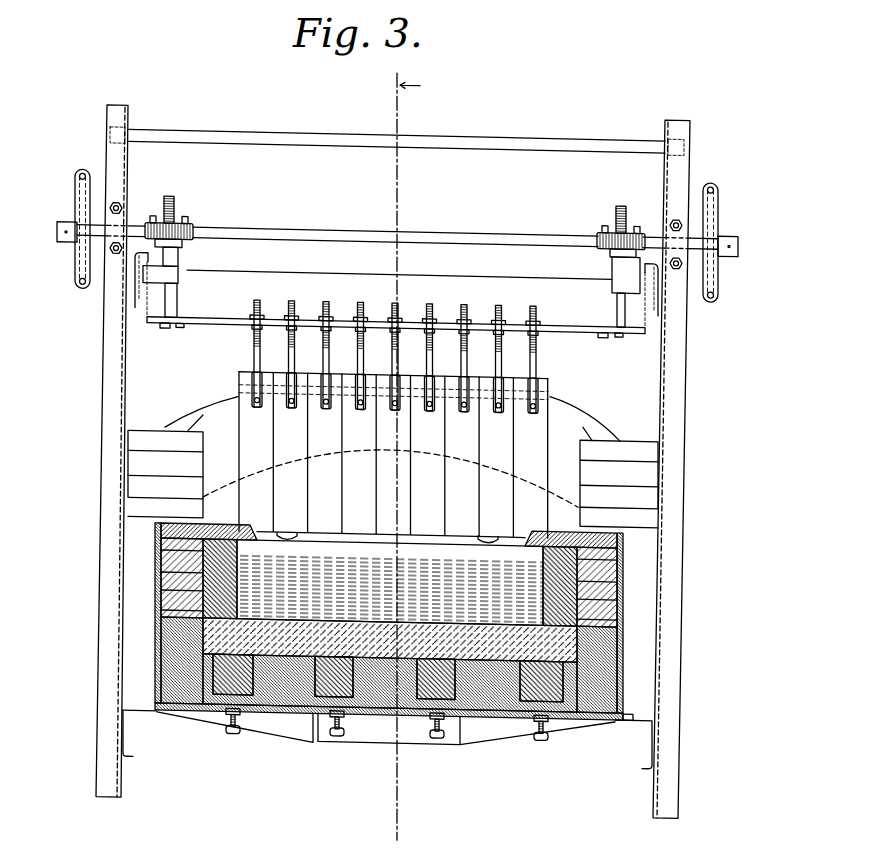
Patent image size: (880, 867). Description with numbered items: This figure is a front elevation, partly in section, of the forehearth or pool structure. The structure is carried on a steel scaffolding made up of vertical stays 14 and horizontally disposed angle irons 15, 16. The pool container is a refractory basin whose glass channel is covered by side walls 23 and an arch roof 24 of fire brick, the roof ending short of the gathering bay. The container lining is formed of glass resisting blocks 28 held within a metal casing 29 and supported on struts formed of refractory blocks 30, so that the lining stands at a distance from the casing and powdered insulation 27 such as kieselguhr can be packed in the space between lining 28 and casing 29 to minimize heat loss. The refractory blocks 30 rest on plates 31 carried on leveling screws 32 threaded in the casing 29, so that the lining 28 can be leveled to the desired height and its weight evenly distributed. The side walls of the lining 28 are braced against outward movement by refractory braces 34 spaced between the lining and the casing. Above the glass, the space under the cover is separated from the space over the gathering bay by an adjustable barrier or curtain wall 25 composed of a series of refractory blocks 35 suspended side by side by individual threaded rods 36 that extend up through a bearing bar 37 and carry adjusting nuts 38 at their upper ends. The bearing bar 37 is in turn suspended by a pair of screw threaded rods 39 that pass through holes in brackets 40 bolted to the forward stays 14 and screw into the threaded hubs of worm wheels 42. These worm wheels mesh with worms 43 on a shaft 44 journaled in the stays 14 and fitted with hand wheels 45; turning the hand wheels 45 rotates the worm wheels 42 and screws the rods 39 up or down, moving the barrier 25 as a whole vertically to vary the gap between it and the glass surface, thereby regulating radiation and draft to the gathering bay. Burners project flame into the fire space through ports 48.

The vertical stays 14 is at (107, 490).
The angle irons 15 is at (128, 619).
The angle irons 16 is at (128, 454).
The side walls 23 is at (135, 524).
The arch roof 24 is at (570, 413).
The barrier or curtain wall 25 is at (393, 455).
The insulation 27 is at (370, 692).
The glass resisting blocks 28 is at (293, 640).
The metal casing 29 is at (503, 702).
The refractory blocks 30 is at (423, 687).
The plates 31 is at (532, 702).
The leveling screws 32 is at (240, 718).
The refractory braces 34 is at (163, 560).
The refractory blocks 35 is at (533, 409).
The threaded rods 36 is at (430, 346).
The bearing bar 37 is at (578, 323).
The adjusting nuts 38 is at (258, 311).
The screw threaded rods 39 is at (170, 296).
The brackets 40 is at (167, 273).
The worm wheels 42 is at (187, 222).
The worms 43 is at (181, 243).
The shaft 44 is at (397, 224).
The hand wheels 45 is at (78, 194).
The ports 48 is at (285, 523).